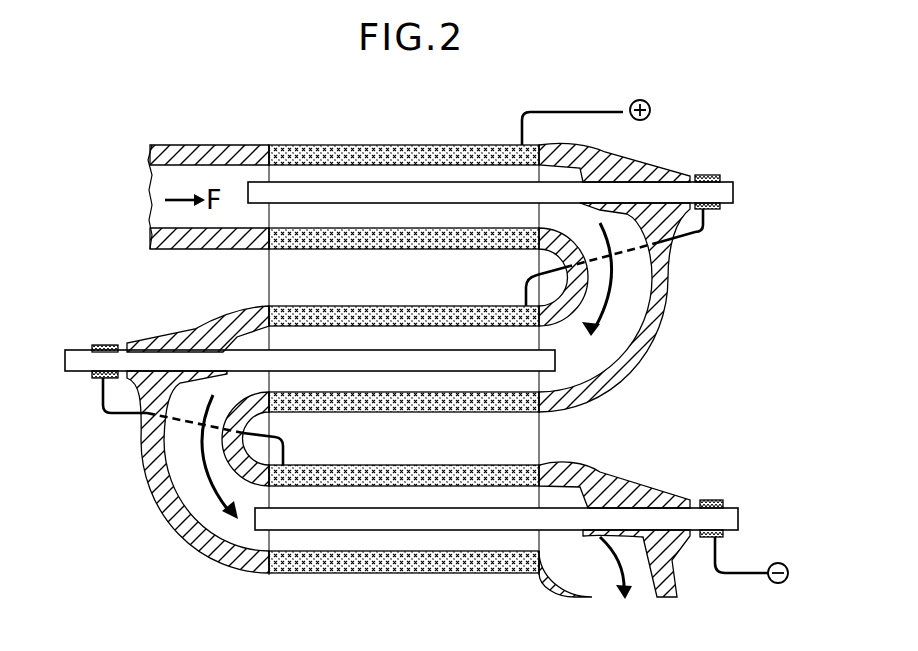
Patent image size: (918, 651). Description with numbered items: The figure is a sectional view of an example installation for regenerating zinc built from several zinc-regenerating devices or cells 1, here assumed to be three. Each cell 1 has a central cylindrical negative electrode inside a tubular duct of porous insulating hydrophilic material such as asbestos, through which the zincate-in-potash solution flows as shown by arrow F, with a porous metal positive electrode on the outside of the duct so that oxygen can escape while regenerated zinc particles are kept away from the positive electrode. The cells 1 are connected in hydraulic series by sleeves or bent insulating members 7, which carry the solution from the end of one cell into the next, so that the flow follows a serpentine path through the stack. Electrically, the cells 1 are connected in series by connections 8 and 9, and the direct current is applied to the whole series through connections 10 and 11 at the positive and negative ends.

The zinc-regenerating device 1 is at (289, 140).
The bent insulating member 7 is at (660, 274).
The connection 8 is at (703, 234).
The connection 9 is at (122, 412).
The connection 10 is at (562, 108).
The connection 11 is at (716, 575).